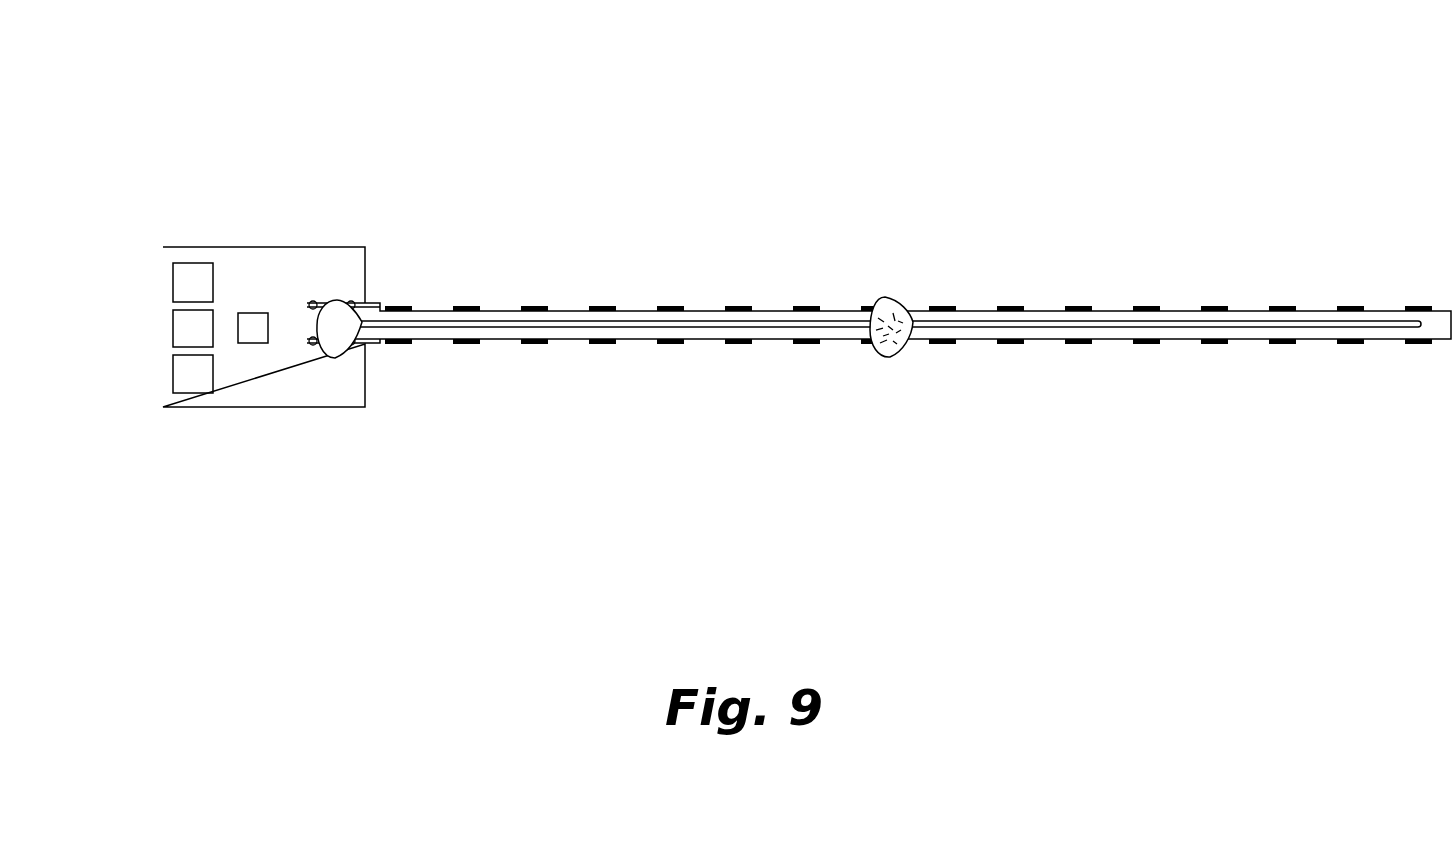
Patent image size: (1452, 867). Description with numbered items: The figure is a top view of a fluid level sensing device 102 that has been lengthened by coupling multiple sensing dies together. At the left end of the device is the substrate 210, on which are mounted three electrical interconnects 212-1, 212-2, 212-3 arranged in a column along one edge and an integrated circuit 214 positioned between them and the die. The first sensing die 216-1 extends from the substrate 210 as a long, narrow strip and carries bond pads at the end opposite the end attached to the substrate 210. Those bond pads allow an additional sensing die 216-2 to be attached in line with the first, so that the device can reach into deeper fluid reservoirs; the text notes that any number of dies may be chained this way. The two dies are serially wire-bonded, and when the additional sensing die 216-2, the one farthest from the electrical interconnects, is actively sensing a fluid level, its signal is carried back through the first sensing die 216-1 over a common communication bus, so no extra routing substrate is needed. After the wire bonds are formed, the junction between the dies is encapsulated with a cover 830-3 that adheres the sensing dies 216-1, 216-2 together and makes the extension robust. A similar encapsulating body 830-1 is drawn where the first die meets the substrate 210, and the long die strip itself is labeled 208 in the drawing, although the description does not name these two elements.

The fluid level sensing device 102 is at (262, 118).
The substrate 210 is at (247, 399).
The electrical interconnect 212-1 is at (195, 377).
The electrical interconnect 212-2 is at (195, 330).
The electrical interconnect 212-3 is at (203, 282).
The integrated circuit 214 is at (253, 325).
The cable 208 is at (425, 335).
The first sensing die 216-1 is at (557, 311).
The additional sensing die 216-2 is at (977, 319).
The sensor node 830-1 is at (333, 310).
The cover 830-3 is at (892, 305).